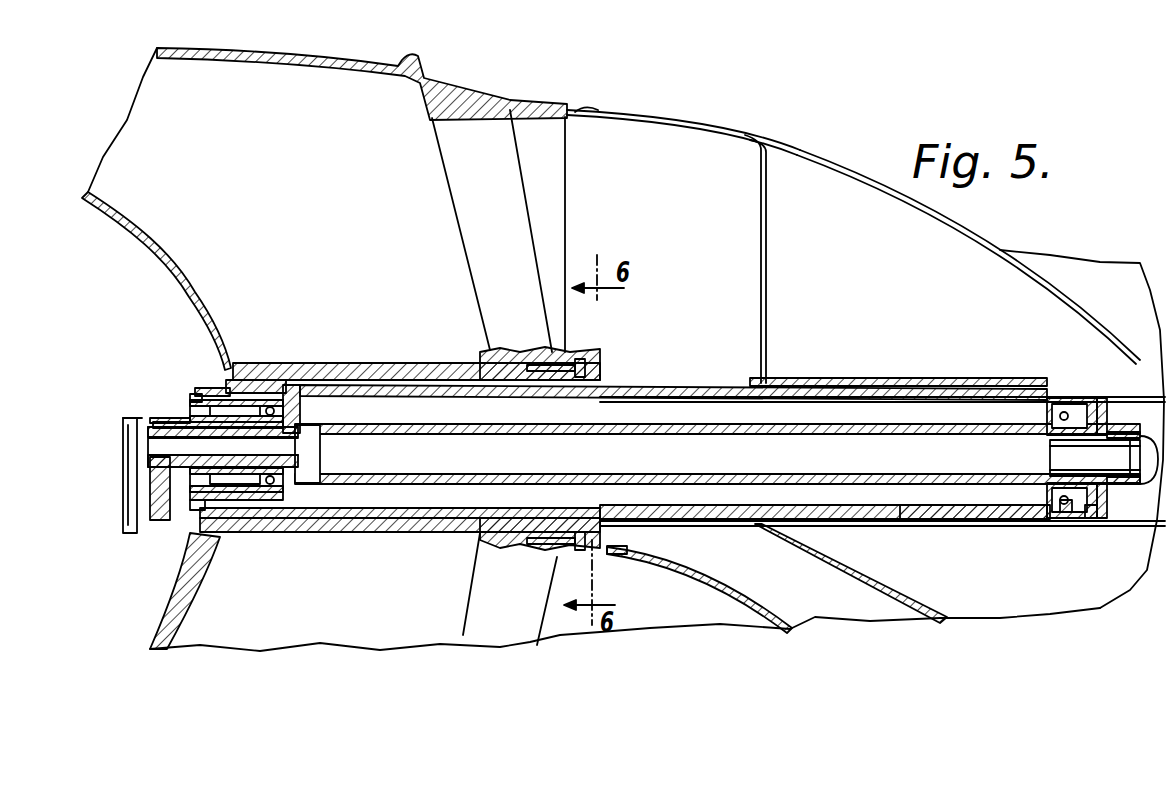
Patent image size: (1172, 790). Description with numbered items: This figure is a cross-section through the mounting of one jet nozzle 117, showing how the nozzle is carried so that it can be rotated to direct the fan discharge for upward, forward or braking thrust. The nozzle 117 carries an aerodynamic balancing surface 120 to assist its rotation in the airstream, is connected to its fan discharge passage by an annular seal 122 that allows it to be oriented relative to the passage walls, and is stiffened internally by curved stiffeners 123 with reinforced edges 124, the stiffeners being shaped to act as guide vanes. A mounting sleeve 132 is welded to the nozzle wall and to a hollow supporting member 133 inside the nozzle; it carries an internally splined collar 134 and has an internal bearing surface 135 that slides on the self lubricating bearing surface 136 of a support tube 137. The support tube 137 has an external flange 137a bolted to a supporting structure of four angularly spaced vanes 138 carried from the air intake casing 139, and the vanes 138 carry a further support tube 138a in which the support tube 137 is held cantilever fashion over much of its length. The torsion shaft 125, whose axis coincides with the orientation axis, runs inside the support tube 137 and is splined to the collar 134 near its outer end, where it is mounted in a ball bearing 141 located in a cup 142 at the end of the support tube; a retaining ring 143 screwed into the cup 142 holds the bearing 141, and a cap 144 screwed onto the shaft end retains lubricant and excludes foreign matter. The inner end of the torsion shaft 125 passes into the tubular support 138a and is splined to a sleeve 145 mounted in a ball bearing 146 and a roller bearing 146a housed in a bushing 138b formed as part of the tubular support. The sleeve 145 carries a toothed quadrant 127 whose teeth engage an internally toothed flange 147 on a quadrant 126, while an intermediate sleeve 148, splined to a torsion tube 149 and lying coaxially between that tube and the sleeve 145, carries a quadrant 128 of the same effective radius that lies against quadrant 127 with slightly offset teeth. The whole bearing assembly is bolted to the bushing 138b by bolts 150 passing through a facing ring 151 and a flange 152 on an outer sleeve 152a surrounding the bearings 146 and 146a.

The jet nozzle 117 is at (1000, 240).
The aerodynamic balancing surface 120 is at (1112, 272).
The annular seal 122 is at (578, 110).
The curved stiffener 123 is at (699, 590).
The reinforced edge 124 is at (618, 552).
The torsion shaft 125 is at (433, 426).
The toothed quadrant 126 is at (122, 500).
The toothed quadrant 127 is at (173, 533).
The toothed quadrant 128 is at (142, 500).
The mounting sleeve 132 is at (893, 395).
The hollow supporting member 133 is at (878, 573).
The internally splined collar 134 is at (1120, 420).
The internal bearing surface 135 is at (810, 388).
The self lubricating bearing surface 136 is at (790, 390).
The support tube 137 is at (1000, 408).
The external flange 137a is at (550, 563).
The vane 138 is at (465, 213).
The further support tube 138a is at (330, 373).
The bushing 138b is at (240, 380).
The air intake casing 139 is at (323, 70).
The ball bearing 141 is at (1062, 520).
The cup 142 is at (1037, 527).
The retaining ring 143 is at (1083, 520).
The cap 144 is at (1147, 458).
The sleeve 145 is at (170, 422).
The ball bearing 146 is at (287, 372).
The roller bearing 146a is at (197, 392).
The internally toothed flange 147 is at (158, 500).
The intermediate sleeve 148 is at (165, 420).
The torsion tube 149 is at (313, 427).
The bolt 150 is at (192, 520).
The facing ring 151 is at (200, 395).
The flange 152 is at (203, 515).
The outer sleeve 152a is at (298, 372).